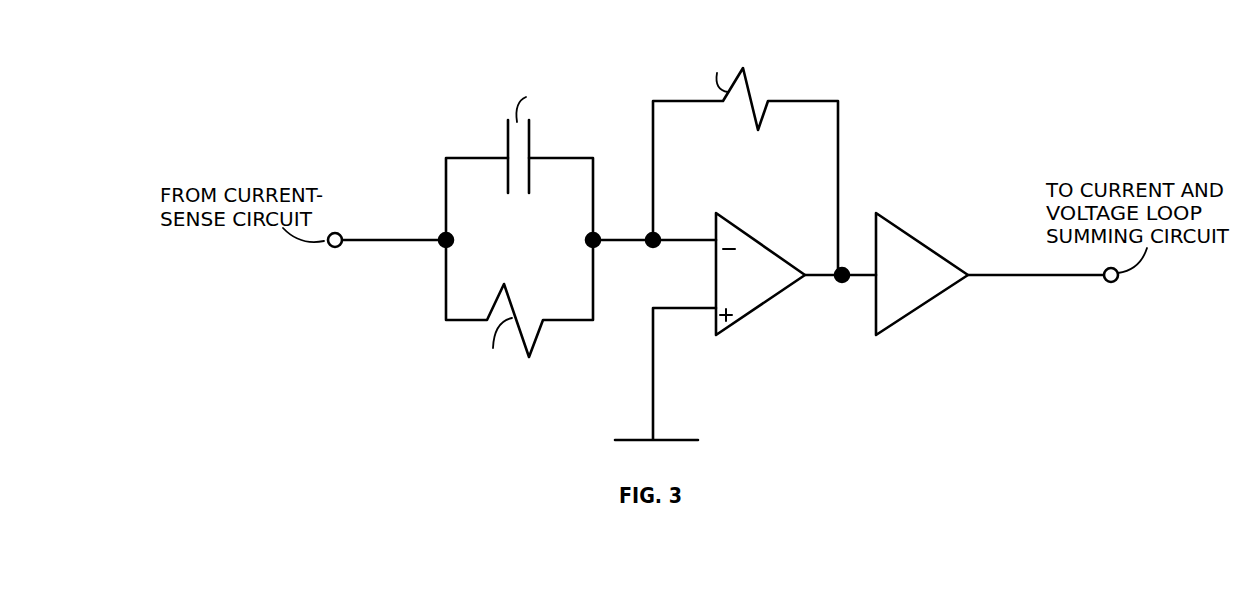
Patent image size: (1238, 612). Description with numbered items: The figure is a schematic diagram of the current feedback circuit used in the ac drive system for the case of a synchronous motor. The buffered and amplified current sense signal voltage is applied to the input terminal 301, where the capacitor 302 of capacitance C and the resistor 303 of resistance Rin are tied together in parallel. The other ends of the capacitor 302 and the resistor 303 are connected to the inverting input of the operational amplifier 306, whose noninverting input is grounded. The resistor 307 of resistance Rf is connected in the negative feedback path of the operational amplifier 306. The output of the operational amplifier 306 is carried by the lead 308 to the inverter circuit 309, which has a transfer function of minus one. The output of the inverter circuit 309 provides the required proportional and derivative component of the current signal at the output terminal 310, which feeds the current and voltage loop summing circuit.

The terminal 301 is at (325, 249).
The capacitor 302 is at (508, 176).
The resistor 303 is at (542, 325).
The operational amplifier 306 is at (777, 232).
The resistor 307 is at (748, 108).
The lead 308 is at (840, 283).
The circuit 309 is at (925, 307).
The terminal 310 is at (1112, 282).